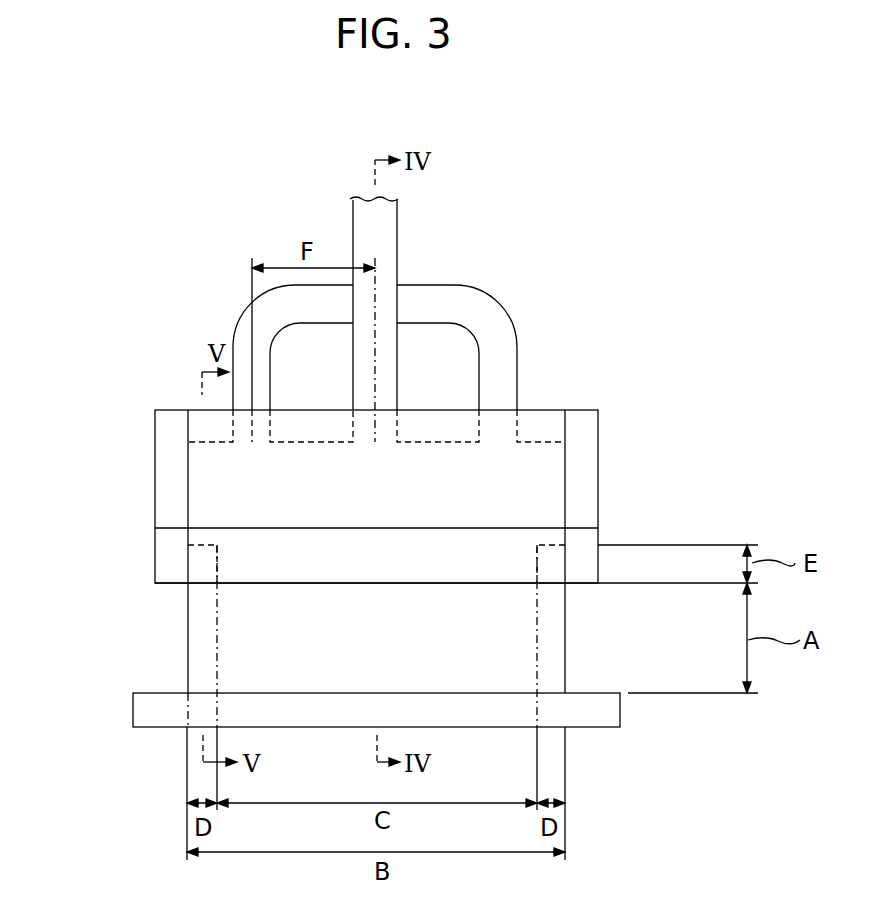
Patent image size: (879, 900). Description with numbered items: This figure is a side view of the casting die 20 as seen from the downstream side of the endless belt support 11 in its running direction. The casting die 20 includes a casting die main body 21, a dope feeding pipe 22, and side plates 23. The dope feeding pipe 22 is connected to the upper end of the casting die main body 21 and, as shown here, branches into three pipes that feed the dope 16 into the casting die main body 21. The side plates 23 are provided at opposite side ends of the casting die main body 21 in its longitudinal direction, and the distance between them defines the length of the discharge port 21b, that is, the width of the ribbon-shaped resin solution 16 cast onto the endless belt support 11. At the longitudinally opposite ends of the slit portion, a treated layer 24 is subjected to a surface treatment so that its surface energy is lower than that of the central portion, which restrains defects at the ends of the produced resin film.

The endless belt support 11 is at (333, 712).
The dope 16 is at (207, 648).
The casting die 20 is at (145, 391).
The casting die main body 21 is at (205, 500).
The discharge port 21b is at (257, 583).
The dope feeding pipe 22 is at (499, 303).
The side plates 23 is at (155, 472).
The treated layer 24 is at (195, 565).